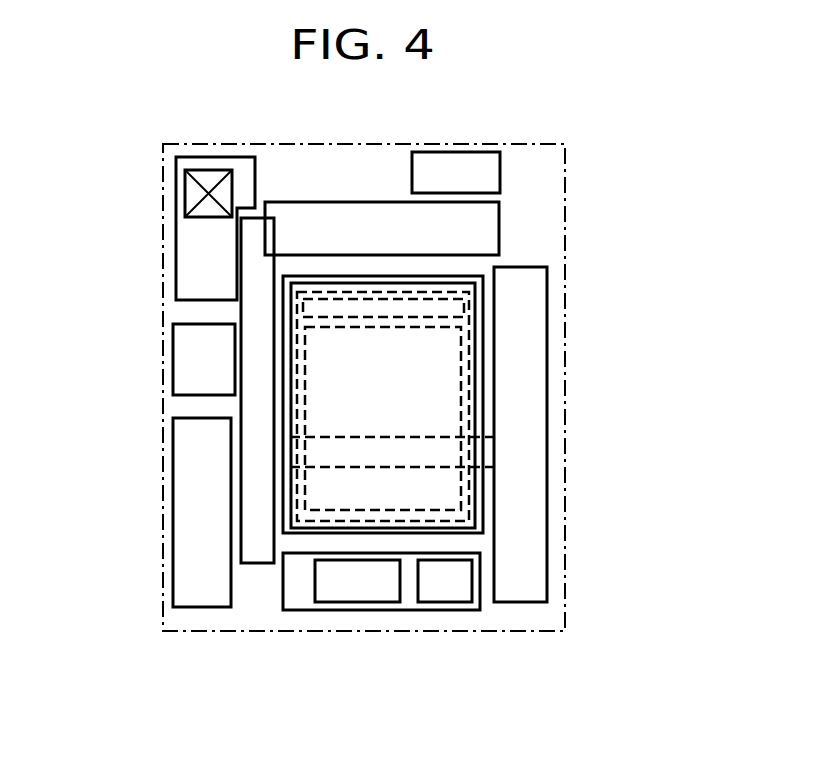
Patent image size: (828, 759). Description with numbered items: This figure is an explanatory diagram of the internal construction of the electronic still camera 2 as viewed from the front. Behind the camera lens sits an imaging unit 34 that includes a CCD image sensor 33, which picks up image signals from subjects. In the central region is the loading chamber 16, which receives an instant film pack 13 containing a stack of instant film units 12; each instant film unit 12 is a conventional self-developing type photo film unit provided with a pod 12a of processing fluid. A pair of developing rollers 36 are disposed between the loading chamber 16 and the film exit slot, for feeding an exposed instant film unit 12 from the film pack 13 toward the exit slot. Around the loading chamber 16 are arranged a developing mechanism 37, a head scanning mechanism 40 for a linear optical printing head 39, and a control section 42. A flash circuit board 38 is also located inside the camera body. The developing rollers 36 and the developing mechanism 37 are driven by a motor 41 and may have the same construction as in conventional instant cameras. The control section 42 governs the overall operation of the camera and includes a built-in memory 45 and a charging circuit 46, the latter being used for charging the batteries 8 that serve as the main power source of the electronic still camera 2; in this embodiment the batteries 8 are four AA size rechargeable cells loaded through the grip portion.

The electronic still camera 2 is at (585, 552).
The batteries 8 is at (185, 530).
The instant film unit 12 is at (500, 357).
The pod of processing fluid 12a is at (418, 317).
The instant film pack 13 is at (505, 302).
The loading chamber 16 is at (482, 268).
The CCD image sensor 33 is at (210, 177).
The imaging unit 34 is at (150, 188).
The developing rollers 36 is at (488, 219).
The developing mechanism 37 is at (259, 560).
The flash circuit board 38 is at (461, 160).
The linear optical printing head 39 is at (345, 435).
The head scanning mechanism 40 is at (575, 477).
The motor 41 is at (185, 355).
The control section 42 is at (347, 637).
The built-in memory 45 is at (385, 592).
The charging circuit 46 is at (460, 592).